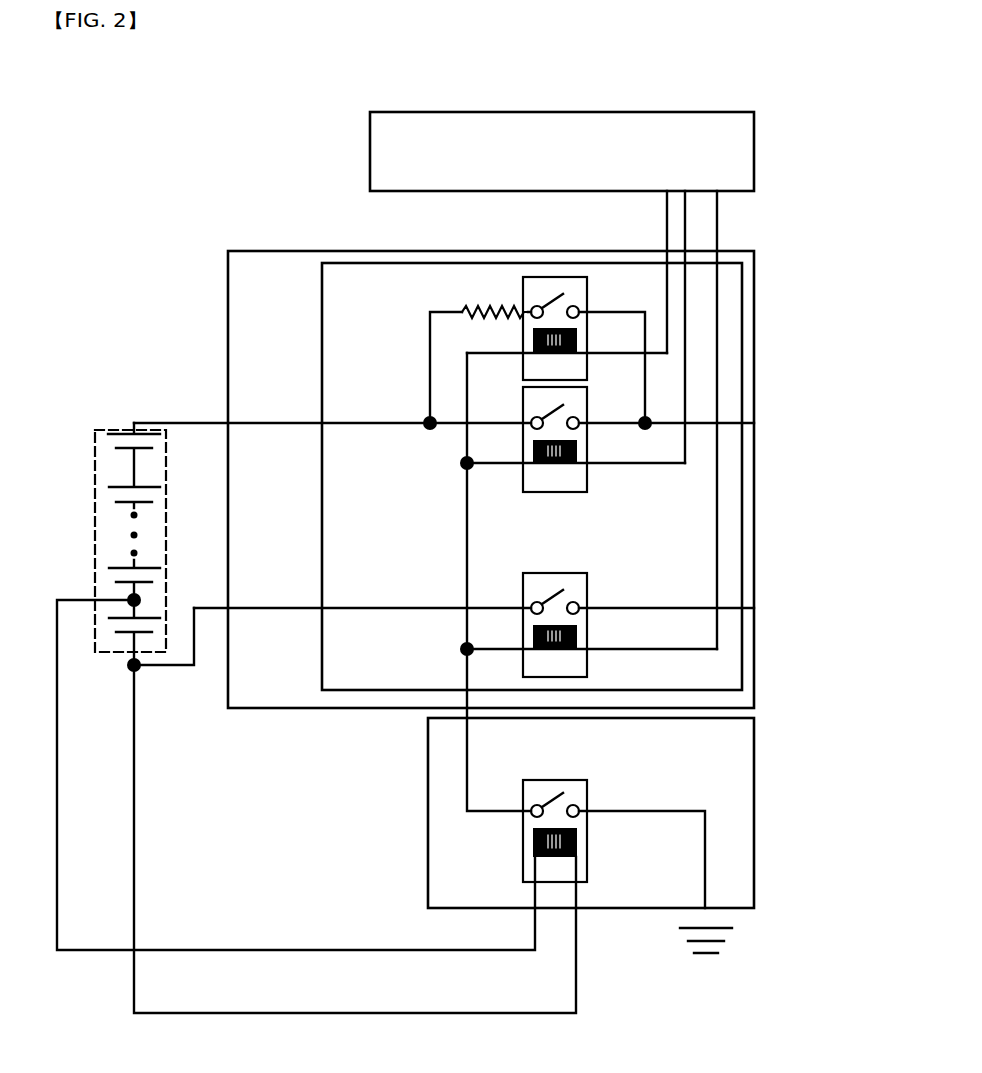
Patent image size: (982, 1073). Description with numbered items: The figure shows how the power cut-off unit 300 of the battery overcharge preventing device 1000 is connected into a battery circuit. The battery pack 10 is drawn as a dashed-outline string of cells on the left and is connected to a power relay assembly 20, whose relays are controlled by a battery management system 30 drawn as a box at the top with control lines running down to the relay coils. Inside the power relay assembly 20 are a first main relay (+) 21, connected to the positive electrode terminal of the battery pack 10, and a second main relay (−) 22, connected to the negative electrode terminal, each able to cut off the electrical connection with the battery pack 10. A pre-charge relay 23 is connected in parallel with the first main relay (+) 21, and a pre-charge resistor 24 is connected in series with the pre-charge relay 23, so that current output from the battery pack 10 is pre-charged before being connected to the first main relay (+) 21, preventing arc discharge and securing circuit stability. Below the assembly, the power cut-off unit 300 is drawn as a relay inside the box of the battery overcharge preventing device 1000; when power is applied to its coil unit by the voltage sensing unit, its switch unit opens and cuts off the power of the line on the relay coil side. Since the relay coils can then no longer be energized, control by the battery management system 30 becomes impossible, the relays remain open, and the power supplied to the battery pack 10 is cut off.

The battery pack 10 is at (114, 430).
The power relay assembly 20 is at (754, 568).
The first main relay (+) 21 is at (587, 470).
The second main relay (−) 22 is at (587, 657).
The pre-charge relay 23 is at (587, 367).
The pre-charge resistor 24 is at (462, 312).
The battery management system 30 is at (754, 147).
The power cut-off unit 300 is at (587, 847).
The battery overcharge preventing device 1000 is at (754, 777).